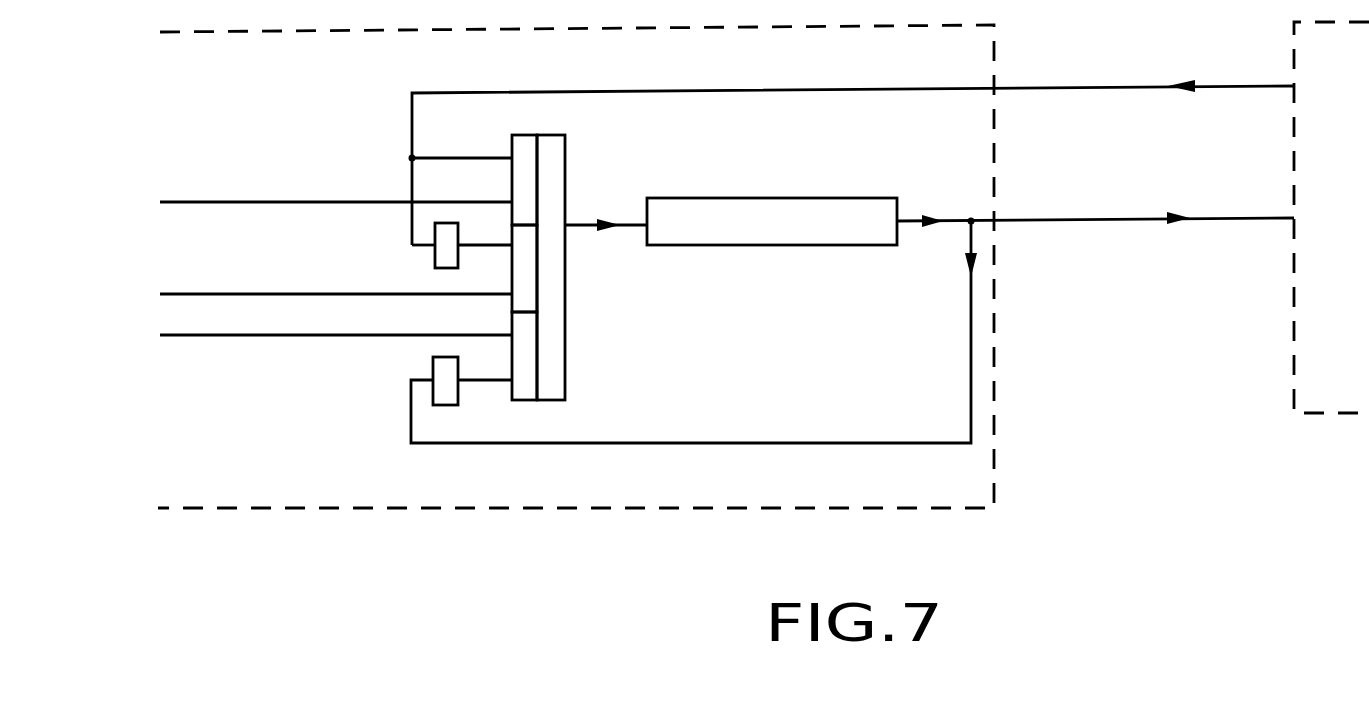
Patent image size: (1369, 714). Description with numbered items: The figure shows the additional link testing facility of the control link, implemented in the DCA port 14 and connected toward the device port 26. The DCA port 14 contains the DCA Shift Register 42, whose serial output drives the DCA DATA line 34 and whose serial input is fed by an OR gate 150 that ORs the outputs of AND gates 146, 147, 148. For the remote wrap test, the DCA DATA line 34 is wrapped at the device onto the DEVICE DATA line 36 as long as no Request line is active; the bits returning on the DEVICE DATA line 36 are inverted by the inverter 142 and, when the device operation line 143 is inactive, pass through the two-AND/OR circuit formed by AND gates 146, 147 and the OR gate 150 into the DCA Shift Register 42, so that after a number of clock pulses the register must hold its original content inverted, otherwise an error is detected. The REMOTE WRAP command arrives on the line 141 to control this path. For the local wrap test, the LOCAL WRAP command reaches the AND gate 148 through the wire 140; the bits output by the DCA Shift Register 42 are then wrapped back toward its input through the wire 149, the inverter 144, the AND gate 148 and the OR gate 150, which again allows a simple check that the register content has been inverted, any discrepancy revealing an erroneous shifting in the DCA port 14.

The DCA port 14 is at (576, 286).
The device port 26 is at (1293, 347).
The DCA DATA line 34 is at (1030, 222).
The DEVICE DATA line 36 is at (1030, 89).
The DCA Shift Register 42 is at (762, 245).
The wire (LOCAL WRAP command) 140 is at (170, 337).
The remote wrap line 141 is at (172, 292).
The inverter 142 is at (433, 257).
The device operation line 143 is at (172, 200).
The inverter 144 is at (450, 405).
The AND gate 146 is at (522, 133).
The AND gate 147 is at (510, 302).
The AND gate 148 is at (525, 403).
The wire 149 is at (697, 444).
The OR gate 150 is at (567, 372).